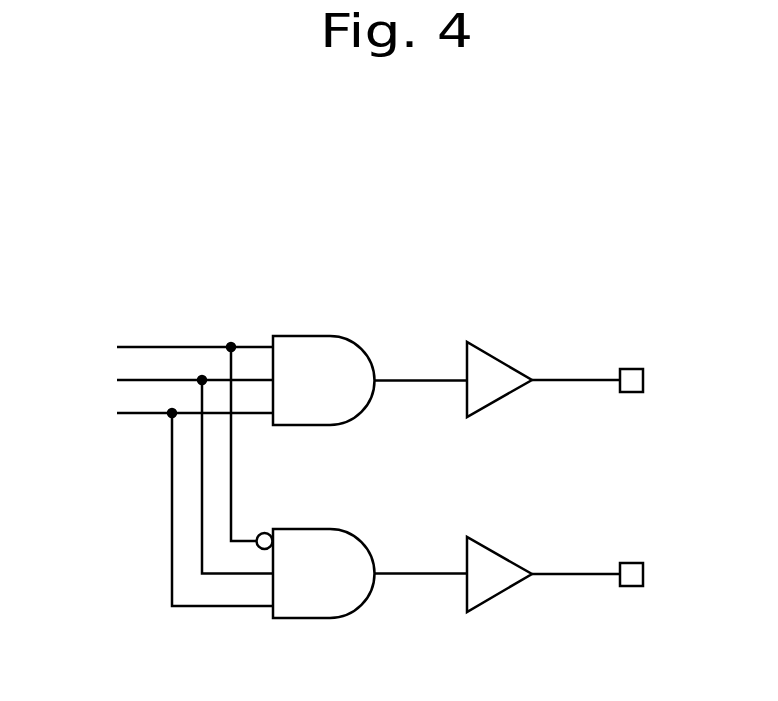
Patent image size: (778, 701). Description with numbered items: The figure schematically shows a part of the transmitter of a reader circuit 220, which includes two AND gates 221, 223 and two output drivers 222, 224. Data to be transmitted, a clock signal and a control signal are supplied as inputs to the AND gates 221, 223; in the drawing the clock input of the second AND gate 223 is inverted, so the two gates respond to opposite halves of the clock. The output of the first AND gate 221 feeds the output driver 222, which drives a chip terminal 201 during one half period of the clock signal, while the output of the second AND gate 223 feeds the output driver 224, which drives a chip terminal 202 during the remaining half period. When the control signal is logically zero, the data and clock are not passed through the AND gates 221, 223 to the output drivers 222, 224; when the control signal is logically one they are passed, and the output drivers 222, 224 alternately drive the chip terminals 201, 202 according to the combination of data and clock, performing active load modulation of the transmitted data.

The reader circuit 220 is at (489, 248).
The AND gate 221 is at (328, 336).
The output driver 222 is at (500, 358).
The AND gate 223 is at (328, 529).
The output driver 224 is at (500, 553).
The chip terminal 201 is at (630, 369).
The chip terminal 202 is at (630, 563).